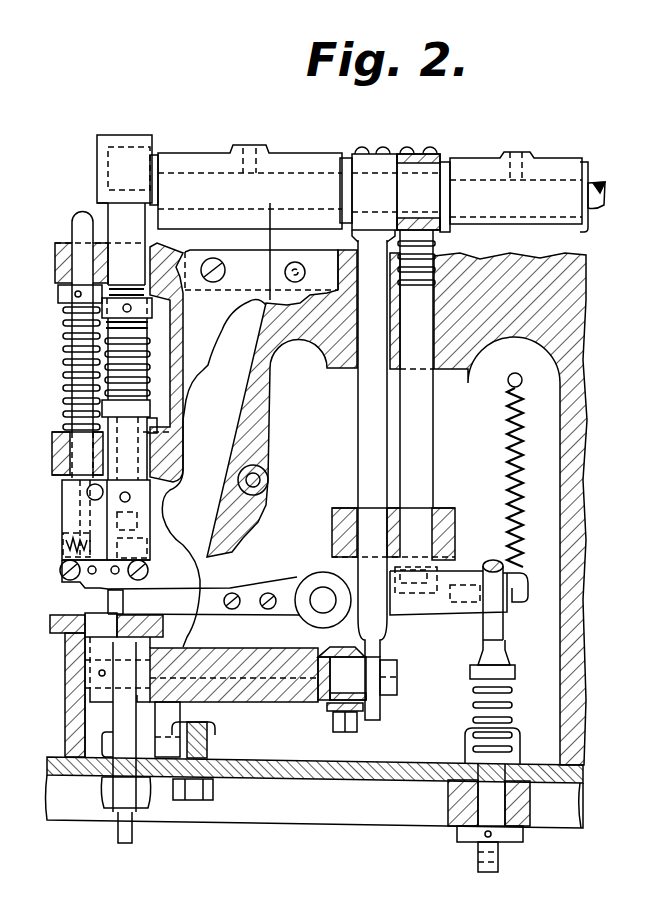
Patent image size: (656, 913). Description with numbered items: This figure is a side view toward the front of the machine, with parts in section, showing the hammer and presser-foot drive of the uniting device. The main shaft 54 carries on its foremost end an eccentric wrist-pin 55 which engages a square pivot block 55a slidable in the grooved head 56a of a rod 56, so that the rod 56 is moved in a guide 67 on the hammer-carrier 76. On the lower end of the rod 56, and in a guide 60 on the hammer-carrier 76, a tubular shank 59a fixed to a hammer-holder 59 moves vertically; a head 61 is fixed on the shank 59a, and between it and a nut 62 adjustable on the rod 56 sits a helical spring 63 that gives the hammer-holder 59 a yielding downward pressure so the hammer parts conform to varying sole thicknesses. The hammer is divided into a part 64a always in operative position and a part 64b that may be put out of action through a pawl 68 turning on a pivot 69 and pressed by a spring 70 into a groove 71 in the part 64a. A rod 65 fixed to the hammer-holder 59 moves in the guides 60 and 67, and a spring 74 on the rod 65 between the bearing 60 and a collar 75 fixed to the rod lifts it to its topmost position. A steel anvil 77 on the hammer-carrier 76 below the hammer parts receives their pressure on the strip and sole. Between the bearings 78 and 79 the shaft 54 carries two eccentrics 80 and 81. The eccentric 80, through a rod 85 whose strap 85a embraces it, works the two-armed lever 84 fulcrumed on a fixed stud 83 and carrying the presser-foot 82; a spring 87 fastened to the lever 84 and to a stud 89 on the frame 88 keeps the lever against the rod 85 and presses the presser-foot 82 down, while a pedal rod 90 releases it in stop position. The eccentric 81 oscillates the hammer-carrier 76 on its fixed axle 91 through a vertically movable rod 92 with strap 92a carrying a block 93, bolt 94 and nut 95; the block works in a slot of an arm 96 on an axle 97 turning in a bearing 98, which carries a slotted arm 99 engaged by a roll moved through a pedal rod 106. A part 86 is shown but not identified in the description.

The main shaft 54 is at (603, 185).
The eccentric wrist-pin 55 is at (130, 160).
The square pivot block 55a is at (128, 148).
The rod 56 is at (100, 249).
The grooved head 56a is at (105, 199).
The hammer-holder 59 is at (150, 495).
The tubular shank 59a is at (157, 426).
The guide 60 is at (52, 447).
The head 61 is at (150, 407).
The nut 62 is at (152, 309).
The helical spring 63 is at (150, 368).
The hammer part 64a is at (146, 566).
The hammer part 64b is at (88, 592).
The rod 65 is at (70, 386).
The guide 67 is at (55, 264).
The pawl 68 is at (88, 518).
The pivot 69 is at (87, 492).
The spring 70 is at (62, 545).
The groove 71 is at (117, 548).
The spring 74 is at (68, 372).
The collar 75 is at (62, 295).
The hammer-carrier 76 is at (203, 370).
The steel anvil 77 is at (62, 638).
The bearing 78 is at (300, 156).
The bearing 79 is at (473, 160).
The eccentric 80 is at (418, 192).
The eccentric 81 is at (396, 192).
The presser-foot 82 is at (300, 590).
The fixed stud 83 is at (321, 608).
The two-armed lever 84 is at (295, 620).
The rod 85 is at (433, 405).
The strap 85a is at (418, 150).
The spring 86 is at (440, 246).
The spring 87 is at (524, 485).
The frame 88 is at (587, 385).
The stud 89 is at (515, 373).
The rod 90 is at (495, 632).
The fixed axle 91 is at (284, 258).
The vertically movable rod 92 is at (357, 405).
The strap 92a is at (375, 150).
The block 93 is at (365, 656).
The bolt 94 is at (366, 705).
The nut 95 is at (390, 697).
The arm 96 is at (334, 714).
The axle 97 is at (280, 720).
The bearing 98 is at (258, 705).
The arm 99 is at (118, 718).
The rod 106 is at (118, 836).